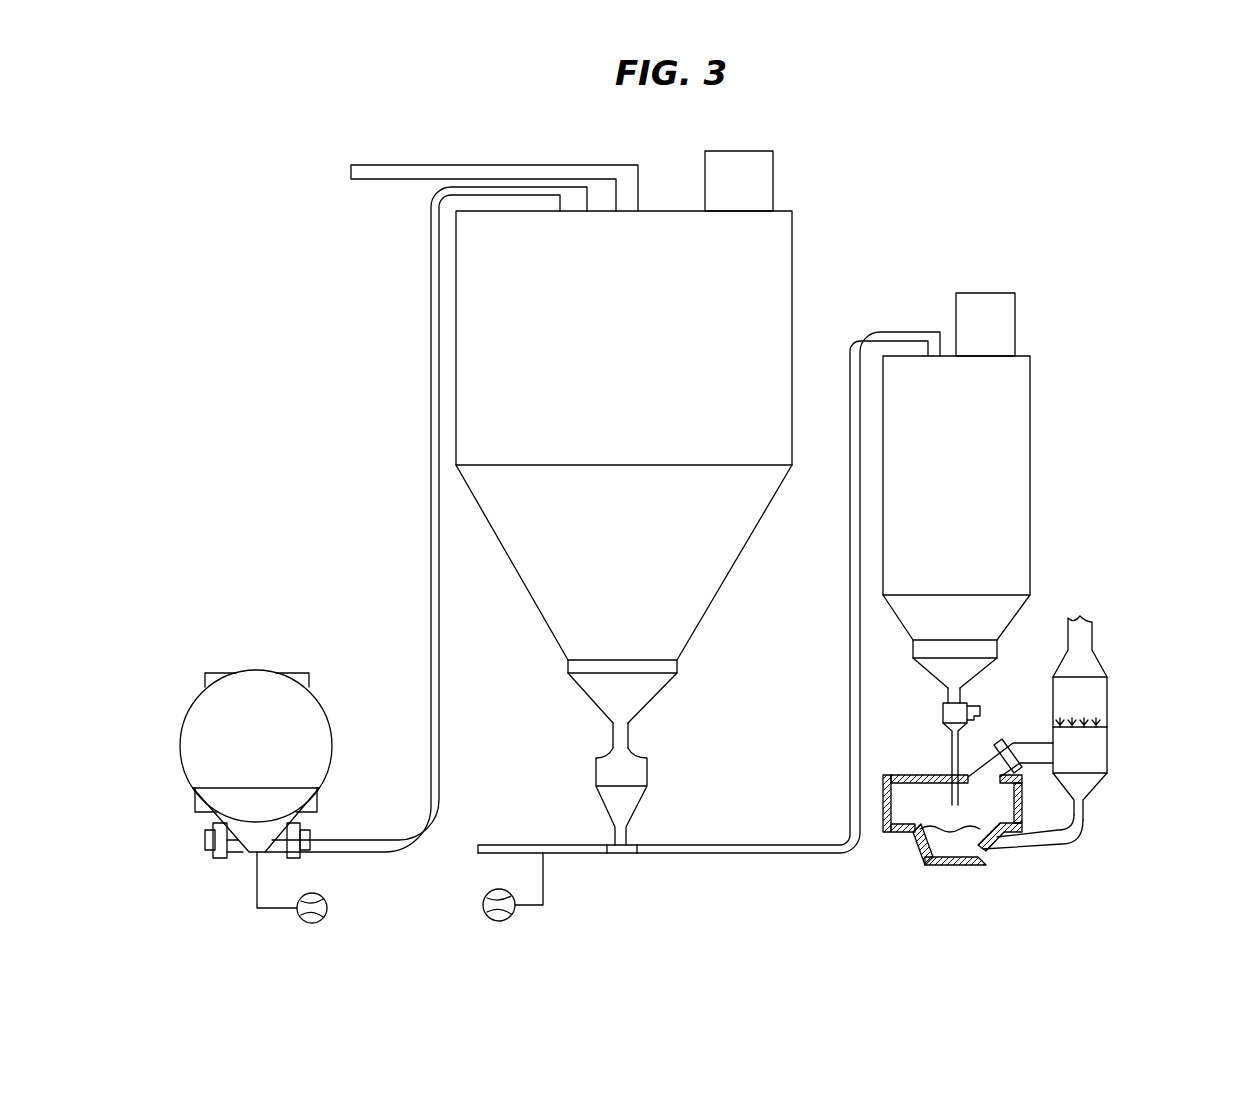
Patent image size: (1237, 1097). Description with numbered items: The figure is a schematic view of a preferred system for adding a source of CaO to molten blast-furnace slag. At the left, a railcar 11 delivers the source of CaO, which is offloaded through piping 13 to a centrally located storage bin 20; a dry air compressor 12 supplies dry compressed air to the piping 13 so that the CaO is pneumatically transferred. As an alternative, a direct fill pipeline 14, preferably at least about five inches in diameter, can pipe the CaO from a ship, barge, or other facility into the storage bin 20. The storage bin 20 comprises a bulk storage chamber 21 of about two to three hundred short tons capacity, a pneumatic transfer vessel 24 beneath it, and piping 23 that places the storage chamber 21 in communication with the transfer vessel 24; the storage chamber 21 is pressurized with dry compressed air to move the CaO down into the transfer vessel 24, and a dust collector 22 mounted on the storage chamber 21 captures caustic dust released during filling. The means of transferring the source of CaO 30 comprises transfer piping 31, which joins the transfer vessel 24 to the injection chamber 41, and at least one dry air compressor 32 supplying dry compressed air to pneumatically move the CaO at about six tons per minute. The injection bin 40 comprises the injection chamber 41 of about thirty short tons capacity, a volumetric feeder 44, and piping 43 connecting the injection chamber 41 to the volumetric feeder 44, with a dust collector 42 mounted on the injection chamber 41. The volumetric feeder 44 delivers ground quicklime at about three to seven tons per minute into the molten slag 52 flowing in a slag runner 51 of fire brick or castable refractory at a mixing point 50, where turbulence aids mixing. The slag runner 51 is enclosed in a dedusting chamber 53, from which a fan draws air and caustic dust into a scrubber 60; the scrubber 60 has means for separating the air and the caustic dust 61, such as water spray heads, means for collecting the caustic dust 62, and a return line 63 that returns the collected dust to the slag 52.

The railcar 11 is at (243, 741).
The dry air compressor 12 is at (328, 908).
The piping 13 is at (393, 838).
The direct fill pipeline 14 is at (362, 180).
The storage bin 20 is at (666, 502).
The bulk storage chamber 21 is at (614, 340).
The dust collector 22 is at (727, 189).
The piping 23 is at (630, 738).
The pneumatic transfer vessel 24 is at (648, 773).
The means of transferring the source of CaO 30 is at (682, 628).
The transfer piping 31 is at (768, 839).
The dry air compressor 32 is at (483, 905).
The injection bin 40 is at (1010, 549).
The injection chamber 41 is at (939, 472).
The dust collector 42 is at (973, 342).
The piping 43 is at (963, 697).
The volumetric feeder 44 is at (943, 712).
The mixing point 50 is at (943, 816).
The slag runner 51 is at (956, 844).
The molten slag 52 is at (955, 861).
The dedusting chamber 53 is at (902, 817).
The scrubber 60 is at (1094, 754).
The means for separating the air and the caustic dust 61 is at (1085, 732).
The means for collecting the caustic dust 62 is at (1098, 790).
The return line 63 is at (1059, 848).